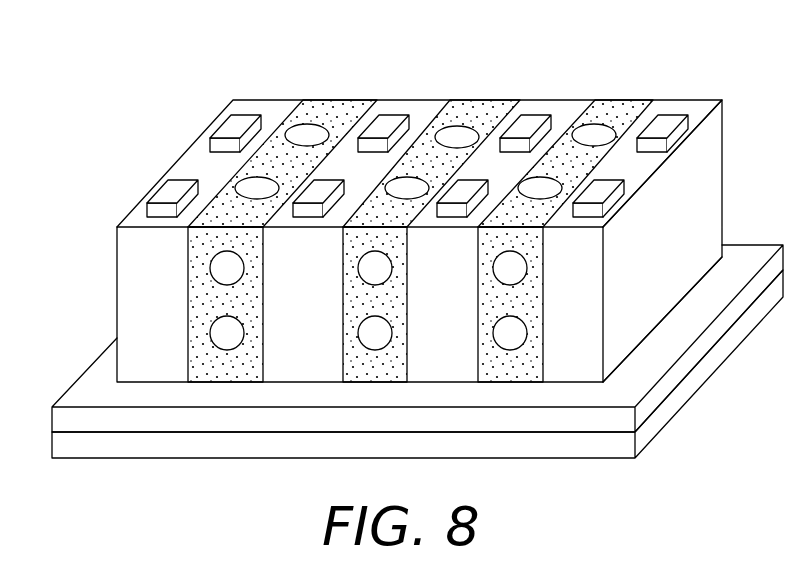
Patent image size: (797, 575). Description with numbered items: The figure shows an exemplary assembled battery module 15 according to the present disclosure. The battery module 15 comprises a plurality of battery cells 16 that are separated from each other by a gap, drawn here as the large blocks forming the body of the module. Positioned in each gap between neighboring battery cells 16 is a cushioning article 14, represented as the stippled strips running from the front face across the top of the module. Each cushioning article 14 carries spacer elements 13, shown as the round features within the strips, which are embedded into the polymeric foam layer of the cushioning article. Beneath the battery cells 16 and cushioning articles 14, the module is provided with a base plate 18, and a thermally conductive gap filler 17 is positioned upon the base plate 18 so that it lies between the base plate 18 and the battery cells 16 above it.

The spacer element 13 is at (453, 133).
The cushioning article 14 is at (615, 112).
The battery module 15 is at (95, 67).
The battery cell 16 is at (705, 172).
The thermally conductive gap filler 17 is at (97, 382).
The base plate 18 is at (708, 363).